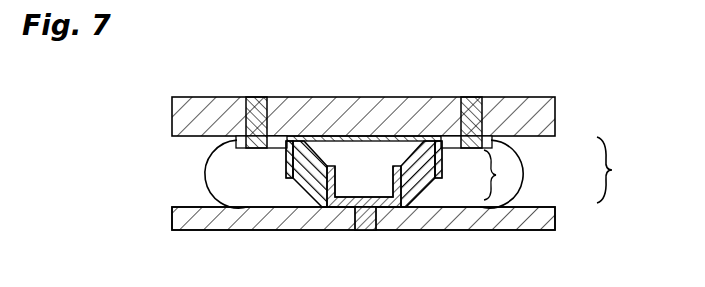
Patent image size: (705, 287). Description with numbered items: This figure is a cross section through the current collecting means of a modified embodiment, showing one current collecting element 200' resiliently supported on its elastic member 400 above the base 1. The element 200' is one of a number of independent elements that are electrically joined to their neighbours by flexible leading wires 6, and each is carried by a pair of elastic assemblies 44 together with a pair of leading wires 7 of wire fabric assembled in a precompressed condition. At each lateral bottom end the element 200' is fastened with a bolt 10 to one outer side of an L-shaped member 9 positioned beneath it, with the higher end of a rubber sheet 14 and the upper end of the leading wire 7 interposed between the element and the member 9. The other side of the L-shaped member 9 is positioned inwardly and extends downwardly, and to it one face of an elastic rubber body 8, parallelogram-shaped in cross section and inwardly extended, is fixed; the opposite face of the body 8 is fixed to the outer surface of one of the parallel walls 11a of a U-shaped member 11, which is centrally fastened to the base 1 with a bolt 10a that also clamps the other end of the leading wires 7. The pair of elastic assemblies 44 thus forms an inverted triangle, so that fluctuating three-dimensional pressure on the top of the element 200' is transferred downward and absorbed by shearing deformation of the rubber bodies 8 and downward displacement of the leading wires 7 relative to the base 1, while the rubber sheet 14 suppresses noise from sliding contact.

The base 1 is at (470, 230).
The flexible leading wire 6 is at (242, 133).
The leading wire 7 is at (205, 173).
The elastic rubber body 8 is at (300, 188).
The L-shaped member 9 is at (286, 160).
The bolt 10 is at (259, 98).
The bolt 10a is at (372, 230).
The U-shaped member 11 is at (340, 200).
The parallel wall 11a is at (394, 178).
The rubber sheet 14 is at (382, 136).
The elastic assembly 44 is at (508, 230).
The current collecting element 200' is at (363, 88).
The elastic member 400 is at (632, 170).